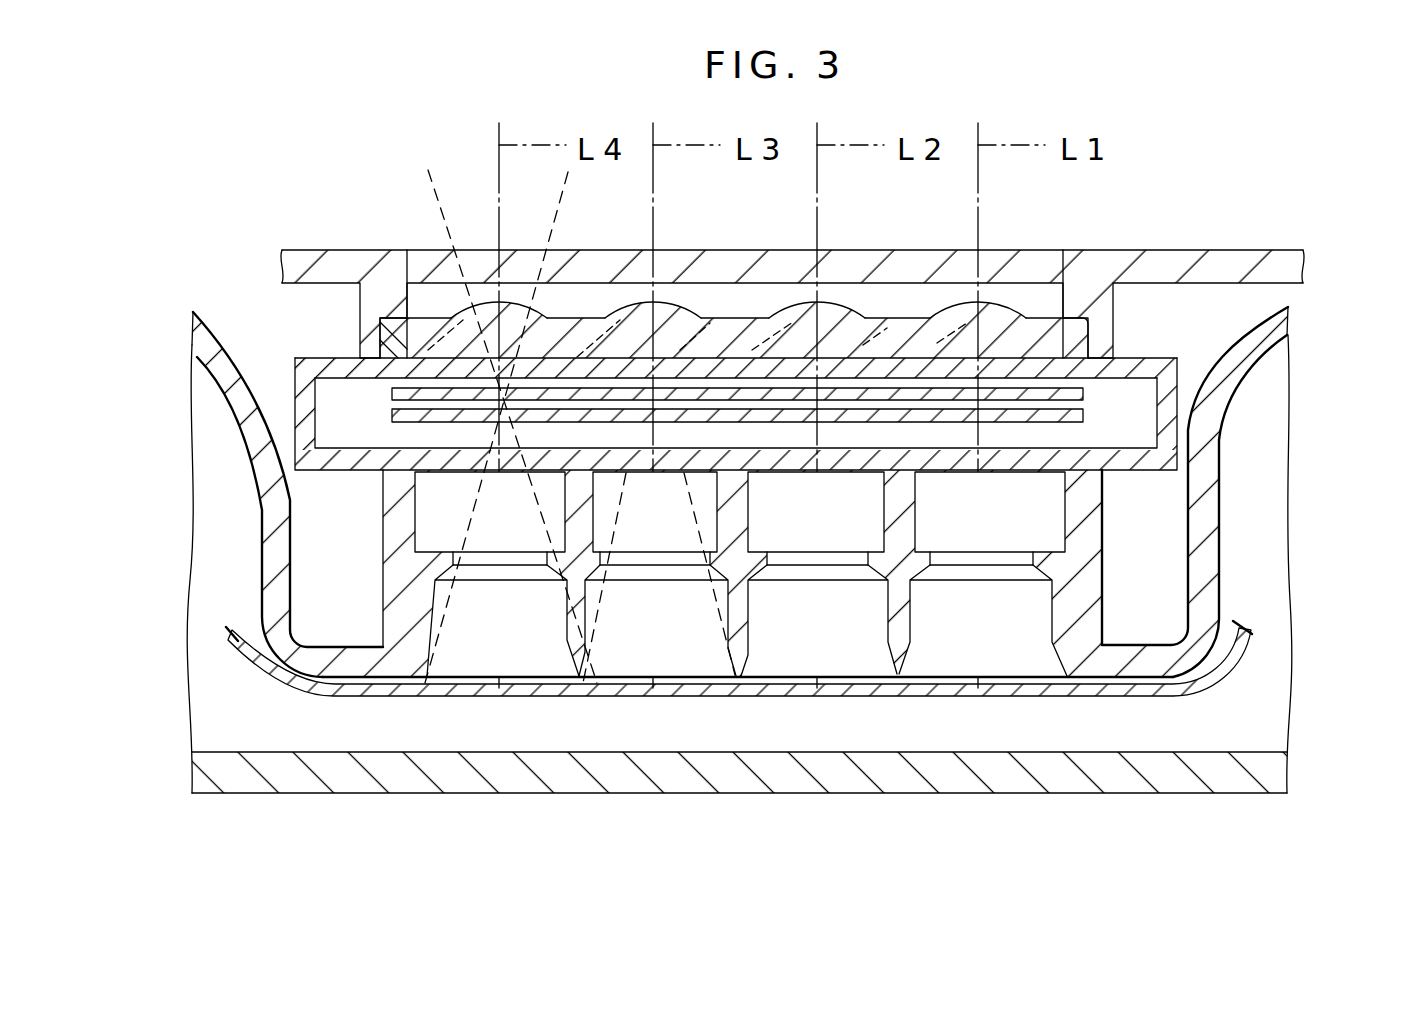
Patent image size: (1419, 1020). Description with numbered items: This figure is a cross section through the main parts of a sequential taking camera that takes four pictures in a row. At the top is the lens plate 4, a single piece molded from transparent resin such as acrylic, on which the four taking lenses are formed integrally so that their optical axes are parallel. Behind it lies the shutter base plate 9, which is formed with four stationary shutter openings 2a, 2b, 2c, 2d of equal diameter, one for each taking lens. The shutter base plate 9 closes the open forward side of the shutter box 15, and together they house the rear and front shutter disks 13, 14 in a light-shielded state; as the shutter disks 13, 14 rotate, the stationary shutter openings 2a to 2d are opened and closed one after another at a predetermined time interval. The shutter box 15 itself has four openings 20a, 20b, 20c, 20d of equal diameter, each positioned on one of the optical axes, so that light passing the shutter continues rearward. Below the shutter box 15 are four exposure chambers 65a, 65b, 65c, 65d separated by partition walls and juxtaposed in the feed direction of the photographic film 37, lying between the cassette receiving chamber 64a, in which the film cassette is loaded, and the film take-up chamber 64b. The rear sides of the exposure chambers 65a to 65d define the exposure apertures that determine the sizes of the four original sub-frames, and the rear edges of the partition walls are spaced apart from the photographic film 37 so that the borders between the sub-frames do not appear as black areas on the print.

The stationary shutter opening 2a is at (972, 367).
The stationary shutter opening 2b is at (810, 367).
The stationary shutter opening 2c is at (648, 367).
The stationary shutter opening 2d is at (505, 367).
The lens plate 4 is at (1033, 327).
The shutter base plate 9 is at (323, 366).
The rear shutter disk 13 is at (1082, 422).
The front shutter disk 14 is at (1085, 397).
The shutter box 15 is at (357, 463).
The opening 20a is at (990, 460).
The opening 20b is at (832, 460).
The opening 20c is at (667, 460).
The opening 20d is at (513, 460).
The photographic film 37 is at (1128, 698).
The cassette receiving chamber 64a is at (220, 445).
The film take-up chamber 64b is at (1240, 410).
The exposure chamber 65a is at (957, 630).
The exposure chamber 65b is at (790, 645).
The exposure chamber 65c is at (628, 640).
The exposure chamber 65d is at (467, 643).